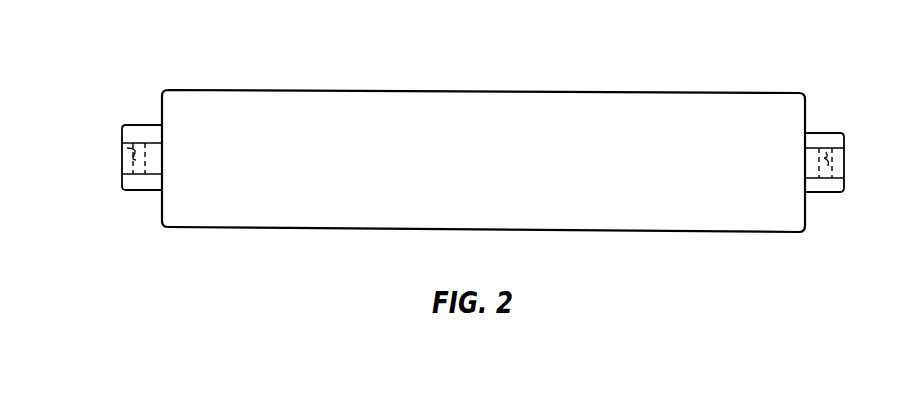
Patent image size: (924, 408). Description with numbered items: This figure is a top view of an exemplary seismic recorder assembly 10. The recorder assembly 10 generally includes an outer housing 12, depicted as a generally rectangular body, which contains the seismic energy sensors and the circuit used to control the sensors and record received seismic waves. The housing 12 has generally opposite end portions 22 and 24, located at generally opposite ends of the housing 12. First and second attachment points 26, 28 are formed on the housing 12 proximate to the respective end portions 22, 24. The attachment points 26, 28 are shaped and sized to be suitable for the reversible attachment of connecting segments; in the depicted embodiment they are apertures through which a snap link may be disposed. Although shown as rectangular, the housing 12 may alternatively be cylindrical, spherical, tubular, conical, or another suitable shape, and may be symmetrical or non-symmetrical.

The seismic recorder assembly 10 is at (678, 85).
The outer housing 12 is at (675, 222).
The end portion 22 is at (162, 103).
The end portion 24 is at (805, 108).
The first attachment point 26 is at (122, 152).
The second attachment point 28 is at (844, 155).